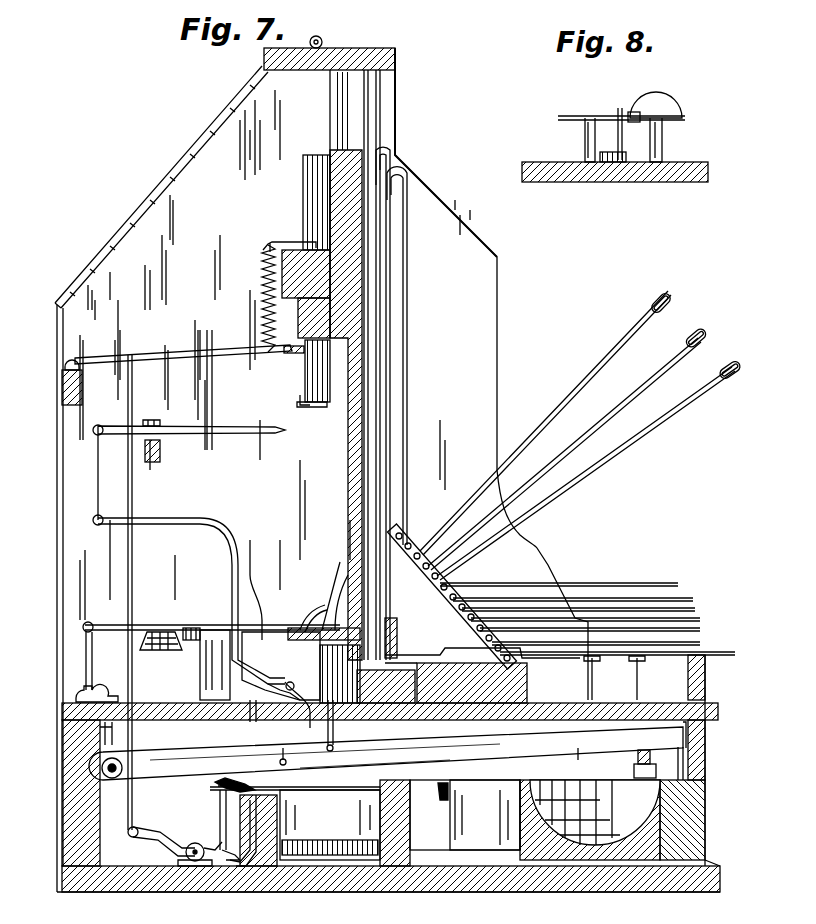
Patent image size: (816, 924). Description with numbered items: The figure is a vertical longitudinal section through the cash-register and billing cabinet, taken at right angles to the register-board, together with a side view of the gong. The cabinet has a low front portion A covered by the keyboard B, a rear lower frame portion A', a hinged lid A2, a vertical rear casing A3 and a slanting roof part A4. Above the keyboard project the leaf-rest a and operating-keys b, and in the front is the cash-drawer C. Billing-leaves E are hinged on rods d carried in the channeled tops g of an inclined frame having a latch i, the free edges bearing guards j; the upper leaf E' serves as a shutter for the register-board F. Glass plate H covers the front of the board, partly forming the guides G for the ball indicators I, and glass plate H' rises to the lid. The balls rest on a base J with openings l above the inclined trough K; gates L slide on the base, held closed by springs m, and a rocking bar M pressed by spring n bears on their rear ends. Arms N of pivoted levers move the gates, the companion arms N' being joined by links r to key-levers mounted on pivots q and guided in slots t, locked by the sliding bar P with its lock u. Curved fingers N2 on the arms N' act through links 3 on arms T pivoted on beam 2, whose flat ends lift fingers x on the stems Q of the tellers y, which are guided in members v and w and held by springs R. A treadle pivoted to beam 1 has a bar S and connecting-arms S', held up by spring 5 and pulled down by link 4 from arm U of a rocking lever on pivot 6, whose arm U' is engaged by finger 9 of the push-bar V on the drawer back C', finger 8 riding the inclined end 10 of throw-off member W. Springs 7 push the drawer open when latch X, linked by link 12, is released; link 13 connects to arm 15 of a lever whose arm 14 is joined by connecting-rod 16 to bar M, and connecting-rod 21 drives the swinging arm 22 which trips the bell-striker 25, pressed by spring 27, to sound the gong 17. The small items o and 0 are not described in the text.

In FIG. 7, the roof part A4 is at (164, 197).
In FIG. 7, the rear casing A3 is at (57, 524).
In FIG. 7, the hinged lid A2 is at (396, 58).
In FIG. 7, the rear lower frame portion A' is at (54, 793).
In FIG. 7, the front portion A is at (718, 760).
In FIG. 7, the glass plate H' is at (315, 204).
In FIG. 7, the register-board F is at (350, 147).
In FIG. 7, the tellers y is at (310, 158).
In FIG. 7, the glass plate H is at (403, 365).
In FIG. 7, the guides G is at (392, 415).
In FIG. 7, the shutter E' is at (448, 371).
In FIG. 7, the guards j is at (410, 196).
In FIG. 7, the spring 5 is at (262, 284).
In FIG. 7, the springs R is at (288, 242).
In FIG. 7, the supporting and guide member w is at (332, 280).
In FIG. 7, the supporting and guide member v is at (332, 318).
In FIG. 7, the stems Q is at (322, 404).
In FIG. 7, the fingers x is at (295, 404).
In FIG. 7, the connecting-arms S' is at (183, 366).
In FIG. 7, the bar S is at (162, 562).
In FIG. 7, the beam 1 is at (62, 394).
In FIG. 7, the arms T is at (185, 427).
In FIG. 7, the beam 2 is at (161, 456).
In FIG. 7, the links 3 is at (101, 476).
In FIG. 7, the link 4 is at (134, 496).
In FIG. 7, the curved fingers N2 is at (180, 526).
In FIG. 7, the connecting-rod 21 is at (250, 566).
In FIG. 7, the connecting-rod 16 is at (112, 626).
In FIG. 7, the bell or gong 17 is at (120, 640).
In FIG. 8, the bell or gong 17 is at (672, 106).
In FIG. 7, the arm 14 is at (86, 657).
In FIG. 7, the arm 15 is at (100, 695).
In FIG. 7, the bell-striker 25 is at (190, 627).
In FIG. 8, the bell-striker 25 is at (606, 116).
In FIG. 7, the swinging arm 22 is at (210, 630).
In FIG. 7, the rocking bar M is at (300, 655).
In FIG. 7, the arms N is at (275, 703).
In FIG. 7, the gates L is at (332, 580).
In FIG. 7, the spring m is at (340, 568).
In FIG. 7, the spring n is at (312, 612).
In FIG. 7, the indicators I is at (350, 526).
In FIG. 7, the openings l is at (398, 625).
In FIG. 7, the base J is at (410, 655).
In FIG. 7, the latch i is at (480, 665).
In FIG. 7, the hinge-rods d is at (414, 545).
In FIG. 7, the billing-leaves E is at (579, 471).
In FIG. 7, the channeled tops g is at (455, 582).
In FIG. 7, the leaf-rest a is at (706, 674).
In FIG. 7, the operating-keys b is at (648, 664).
In FIG. 7, the keyboard B is at (719, 706).
In FIG. 7, the cash-drawer C is at (636, 820).
In FIG. 7, the lock u is at (640, 780).
In FIG. 7, the locking-bar P is at (637, 762).
In FIG. 7, the guide-slots t is at (686, 768).
In FIG. 7, the bracket o is at (690, 738).
In FIG. 7, the inclined trough K is at (386, 753).
In FIG. 7, the pin 0 is at (578, 760).
In FIG. 7, the supporting-pivots q is at (330, 725).
In FIG. 7, the links r is at (282, 748).
In FIG. 7, the arms N' is at (235, 721).
In FIG. 7, the link 13 is at (106, 728).
In FIG. 7, the link 12 is at (333, 786).
In FIG. 7, the finger 8 is at (214, 782).
In FIG. 7, the finger 9 is at (220, 806).
In FIG. 7, the throw-off member W is at (218, 828).
In FIG. 7, the arm U is at (164, 873).
In FIG. 7, the pivot 6 is at (194, 866).
In FIG. 7, the arm U' is at (230, 857).
In FIG. 7, the inclined end 10 is at (270, 868).
In FIG. 7, the push-bar V is at (310, 794).
In FIG. 7, the springs 7 is at (300, 866).
In FIG. 7, the latch X is at (445, 790).
In FIG. 7, the back of the cash-drawer C' is at (465, 815).
In FIG. 8, the spring 27 is at (628, 148).